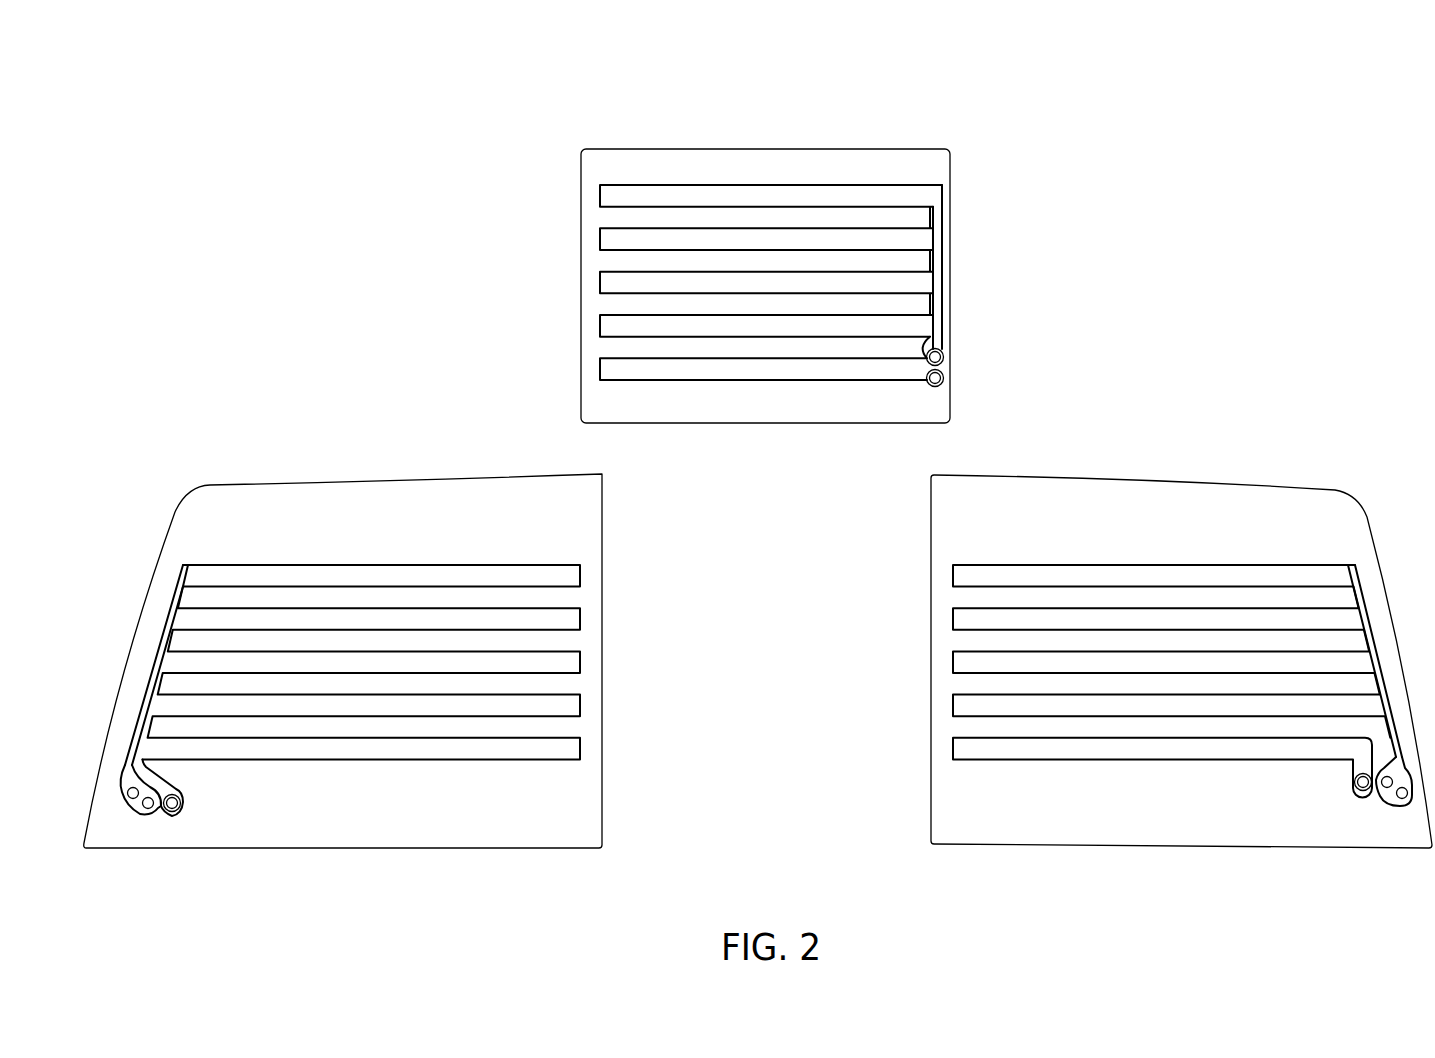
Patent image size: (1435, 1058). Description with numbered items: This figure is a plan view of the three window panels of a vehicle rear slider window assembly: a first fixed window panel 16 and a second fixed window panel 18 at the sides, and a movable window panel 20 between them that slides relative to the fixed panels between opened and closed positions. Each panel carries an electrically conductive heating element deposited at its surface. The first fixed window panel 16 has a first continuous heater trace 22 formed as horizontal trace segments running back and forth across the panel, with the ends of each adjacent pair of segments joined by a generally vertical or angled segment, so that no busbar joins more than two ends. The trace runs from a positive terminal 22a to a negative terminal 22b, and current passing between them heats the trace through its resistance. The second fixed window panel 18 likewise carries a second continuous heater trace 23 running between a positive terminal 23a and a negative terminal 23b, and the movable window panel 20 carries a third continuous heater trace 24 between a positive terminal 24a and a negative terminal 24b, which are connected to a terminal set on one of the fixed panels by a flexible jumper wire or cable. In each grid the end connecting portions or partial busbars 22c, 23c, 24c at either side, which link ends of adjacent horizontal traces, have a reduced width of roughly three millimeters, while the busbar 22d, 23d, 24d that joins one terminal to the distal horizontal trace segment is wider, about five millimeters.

The first fixed window panel 16 is at (1232, 494).
The second fixed window panel 18 is at (322, 500).
The movable window panel 20 is at (738, 160).
The first continuous heater trace 22 is at (1138, 648).
The positive terminal 22a is at (1397, 788).
The negative terminal 22b is at (1363, 786).
The end connecting portions or partial busbars 22c is at (953, 750).
The busbar 22d is at (1367, 610).
The second continuous heater trace 23 is at (394, 632).
The positive terminal 23a is at (140, 808).
The negative terminal 23b is at (172, 805).
The end connecting portions or partial busbars 23c is at (582, 702).
The busbar 23d is at (168, 613).
The third continuous heater trace 24 is at (761, 235).
The positive terminal 24a is at (941, 354).
The negative terminal 24b is at (940, 380).
The end connecting portions or partial busbars 24c is at (601, 370).
The busbar 24d is at (943, 240).